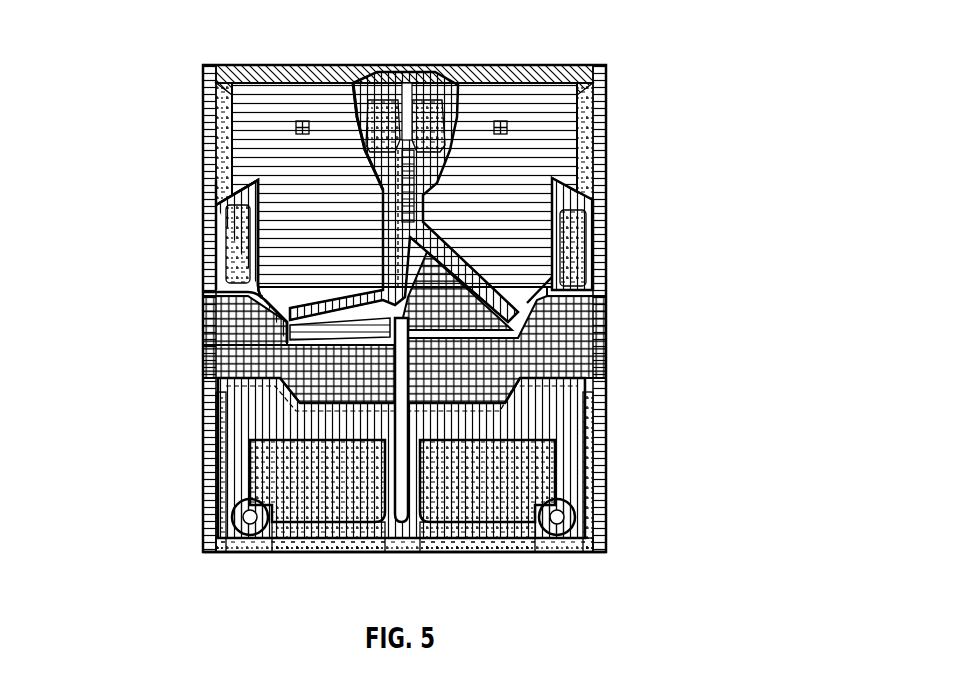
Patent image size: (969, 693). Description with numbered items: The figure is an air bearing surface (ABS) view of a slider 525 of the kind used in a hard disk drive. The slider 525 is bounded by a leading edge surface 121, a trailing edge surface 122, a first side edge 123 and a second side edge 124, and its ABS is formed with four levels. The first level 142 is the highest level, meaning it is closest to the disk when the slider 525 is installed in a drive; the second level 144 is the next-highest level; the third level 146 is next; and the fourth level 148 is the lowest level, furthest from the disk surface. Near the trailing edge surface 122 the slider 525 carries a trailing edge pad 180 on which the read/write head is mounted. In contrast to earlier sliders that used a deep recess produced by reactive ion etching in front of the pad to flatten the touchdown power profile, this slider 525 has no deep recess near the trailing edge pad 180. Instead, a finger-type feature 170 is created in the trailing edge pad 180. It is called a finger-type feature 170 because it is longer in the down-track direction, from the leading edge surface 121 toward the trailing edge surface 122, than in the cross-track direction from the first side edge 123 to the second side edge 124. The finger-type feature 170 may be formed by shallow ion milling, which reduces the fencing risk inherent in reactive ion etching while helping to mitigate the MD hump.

The slider 525 is at (126, 38).
The trailing edge surface 122 is at (502, 62).
The first side edge 123 is at (201, 146).
The second side edge 124 is at (609, 134).
The third level 146 is at (252, 98).
The trailing edge pad 180 is at (350, 117).
The finger-type feature 170 is at (410, 98).
The fourth level 148 is at (232, 344).
The first level 142 is at (243, 422).
The second level 144 is at (468, 545).
The leading edge surface 121 is at (298, 560).